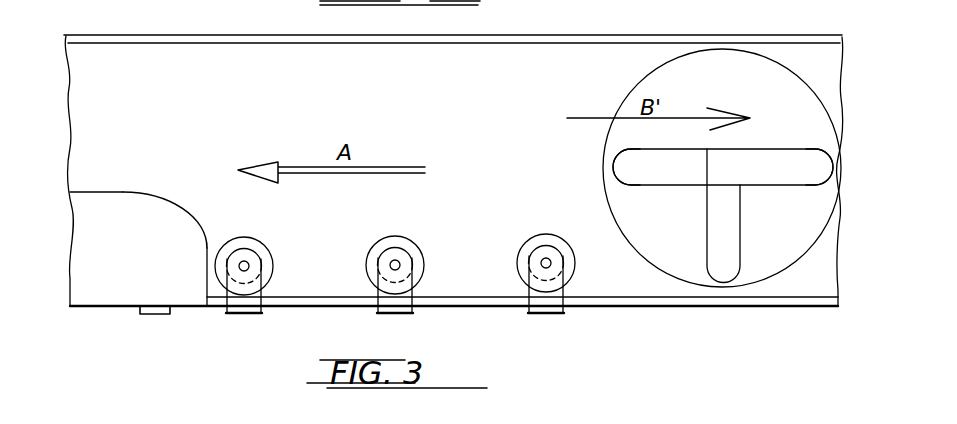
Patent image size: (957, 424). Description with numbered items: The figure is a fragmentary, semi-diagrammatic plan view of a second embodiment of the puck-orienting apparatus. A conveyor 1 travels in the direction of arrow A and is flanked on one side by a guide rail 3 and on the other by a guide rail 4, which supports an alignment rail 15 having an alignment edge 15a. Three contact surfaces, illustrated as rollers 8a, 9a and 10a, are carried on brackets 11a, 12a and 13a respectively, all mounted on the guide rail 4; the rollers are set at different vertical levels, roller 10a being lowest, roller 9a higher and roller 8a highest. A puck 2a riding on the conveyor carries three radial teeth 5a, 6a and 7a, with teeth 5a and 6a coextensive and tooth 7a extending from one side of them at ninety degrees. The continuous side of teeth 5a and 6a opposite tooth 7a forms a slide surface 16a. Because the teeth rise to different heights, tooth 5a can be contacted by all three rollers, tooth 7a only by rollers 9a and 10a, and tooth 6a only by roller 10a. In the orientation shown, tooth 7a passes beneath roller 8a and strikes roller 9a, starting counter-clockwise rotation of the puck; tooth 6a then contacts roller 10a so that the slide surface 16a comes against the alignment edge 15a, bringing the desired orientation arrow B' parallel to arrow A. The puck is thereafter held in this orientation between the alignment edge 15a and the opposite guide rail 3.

The conveyor 1 is at (505, 55).
The guide rail 3 is at (600, 35).
The guide rail 4 is at (658, 307).
The puck 2a is at (727, 48).
The slide surface 16a is at (722, 151).
The tooth 6a is at (630, 167).
The tooth 5a is at (811, 167).
The tooth 7a is at (723, 216).
The alignment rail 15 is at (115, 202).
The alignment edge 15a is at (167, 200).
The roller 10a is at (258, 240).
The roller 9a is at (417, 232).
The roller 8a is at (547, 233).
The bracket 13a is at (238, 316).
The bracket 12a is at (393, 316).
The bracket 11a is at (543, 315).